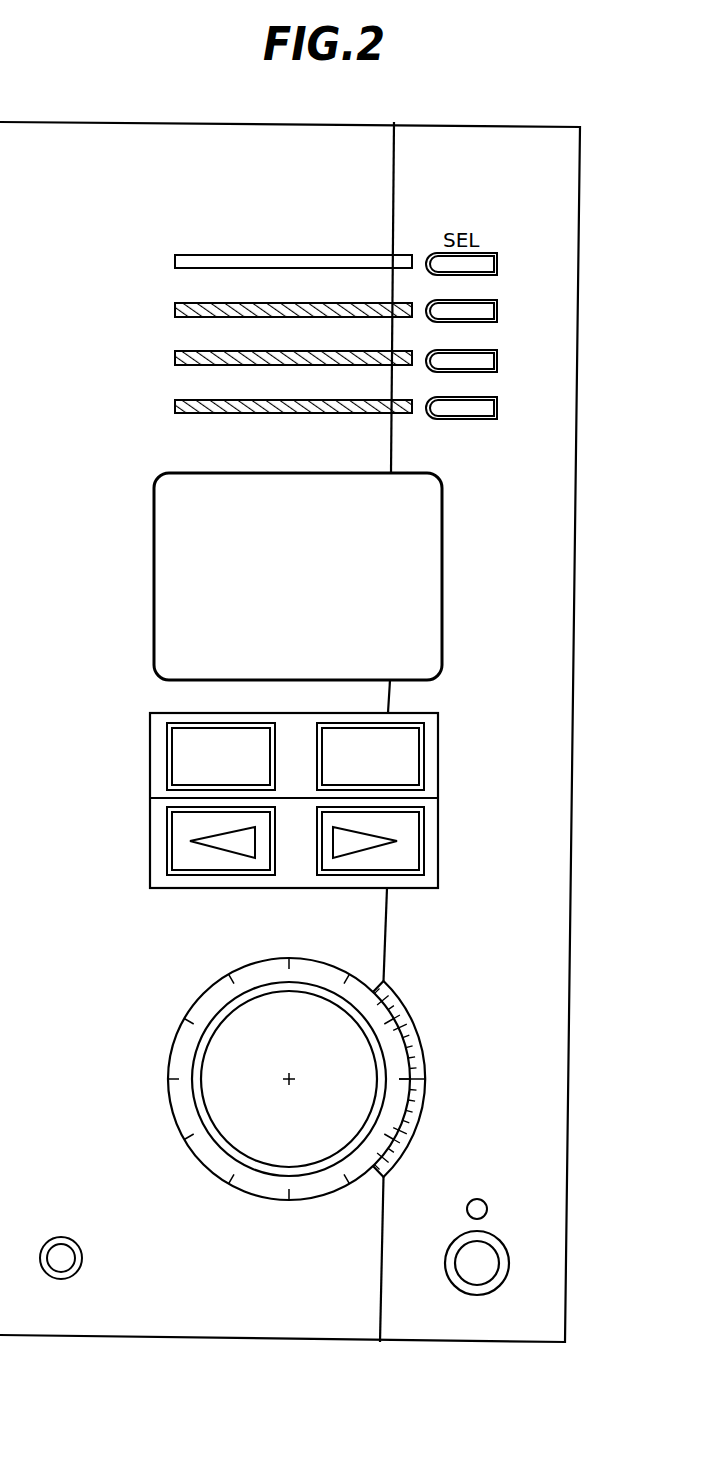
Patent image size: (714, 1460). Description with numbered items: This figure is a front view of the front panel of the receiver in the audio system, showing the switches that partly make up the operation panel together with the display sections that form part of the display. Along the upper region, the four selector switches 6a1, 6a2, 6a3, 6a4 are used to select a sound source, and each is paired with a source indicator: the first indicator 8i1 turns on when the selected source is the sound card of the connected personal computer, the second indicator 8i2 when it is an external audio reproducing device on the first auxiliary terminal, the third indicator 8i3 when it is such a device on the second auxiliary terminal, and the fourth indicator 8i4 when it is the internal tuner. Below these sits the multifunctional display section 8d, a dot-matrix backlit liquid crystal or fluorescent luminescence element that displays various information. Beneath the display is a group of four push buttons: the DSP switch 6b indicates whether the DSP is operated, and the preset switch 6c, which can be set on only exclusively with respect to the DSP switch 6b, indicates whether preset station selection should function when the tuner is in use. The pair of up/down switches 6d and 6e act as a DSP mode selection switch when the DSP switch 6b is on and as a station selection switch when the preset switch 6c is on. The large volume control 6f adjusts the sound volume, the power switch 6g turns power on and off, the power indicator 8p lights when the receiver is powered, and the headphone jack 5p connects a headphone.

The first indicator 8i1 is at (175, 261).
The second indicator 8i2 is at (175, 310).
The third indicator 8i3 is at (175, 358).
The fourth indicator 8i4 is at (175, 406).
The selector switch 6a1 is at (497, 262).
The selector switch 6a2 is at (497, 311).
The selector switch 6a3 is at (497, 361).
The selector switch 6a4 is at (497, 408).
The multifunctional display section 8d is at (154, 529).
The DSP switch 6b is at (167, 757).
The preset switch 6c is at (424, 760).
The up/down switch 6d is at (167, 840).
The up/down switch 6e is at (424, 843).
The volume control 6f is at (209, 996).
The power switch 6g is at (456, 1240).
The power indicator 8p is at (477, 1199).
The headphone jack 5p is at (61, 1237).